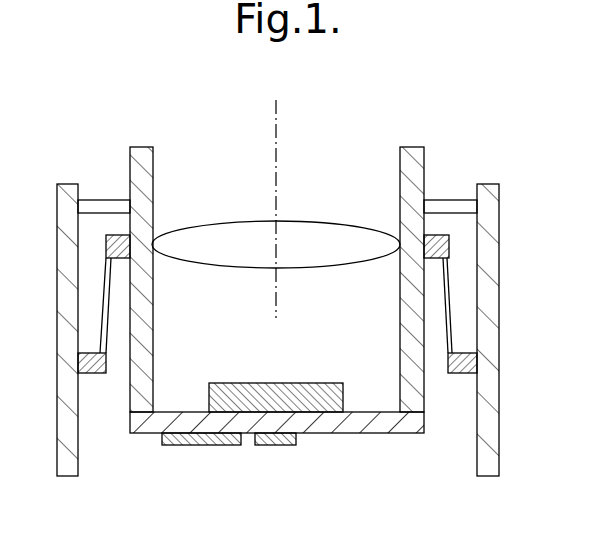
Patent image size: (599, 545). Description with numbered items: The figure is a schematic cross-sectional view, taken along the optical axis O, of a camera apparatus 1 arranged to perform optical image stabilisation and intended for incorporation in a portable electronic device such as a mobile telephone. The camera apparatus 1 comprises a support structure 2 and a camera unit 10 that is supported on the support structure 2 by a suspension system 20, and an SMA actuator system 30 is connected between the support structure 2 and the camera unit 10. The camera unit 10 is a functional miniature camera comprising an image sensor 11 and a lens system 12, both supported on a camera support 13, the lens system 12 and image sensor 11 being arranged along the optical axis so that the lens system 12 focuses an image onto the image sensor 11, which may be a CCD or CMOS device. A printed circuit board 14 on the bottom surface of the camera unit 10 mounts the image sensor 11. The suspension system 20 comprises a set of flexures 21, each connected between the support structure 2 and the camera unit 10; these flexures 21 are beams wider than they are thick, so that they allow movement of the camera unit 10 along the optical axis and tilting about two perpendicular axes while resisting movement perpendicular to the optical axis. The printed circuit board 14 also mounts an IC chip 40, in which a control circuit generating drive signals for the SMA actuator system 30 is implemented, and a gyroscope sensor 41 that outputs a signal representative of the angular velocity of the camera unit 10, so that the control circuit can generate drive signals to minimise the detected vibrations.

The camera apparatus 1 is at (57, 138).
The support structure 2 is at (490, 222).
The camera unit 10 is at (344, 165).
The image sensor 11 is at (249, 396).
The lens system 12 is at (231, 238).
The camera support 13 is at (413, 332).
The printed circuit board 14 is at (380, 418).
The suspension system 20 is at (463, 184).
The flexures 21 is at (100, 207).
The SMA actuator system 30 is at (460, 297).
The IC chip 40 is at (195, 445).
The gyroscope sensor 41 is at (277, 445).